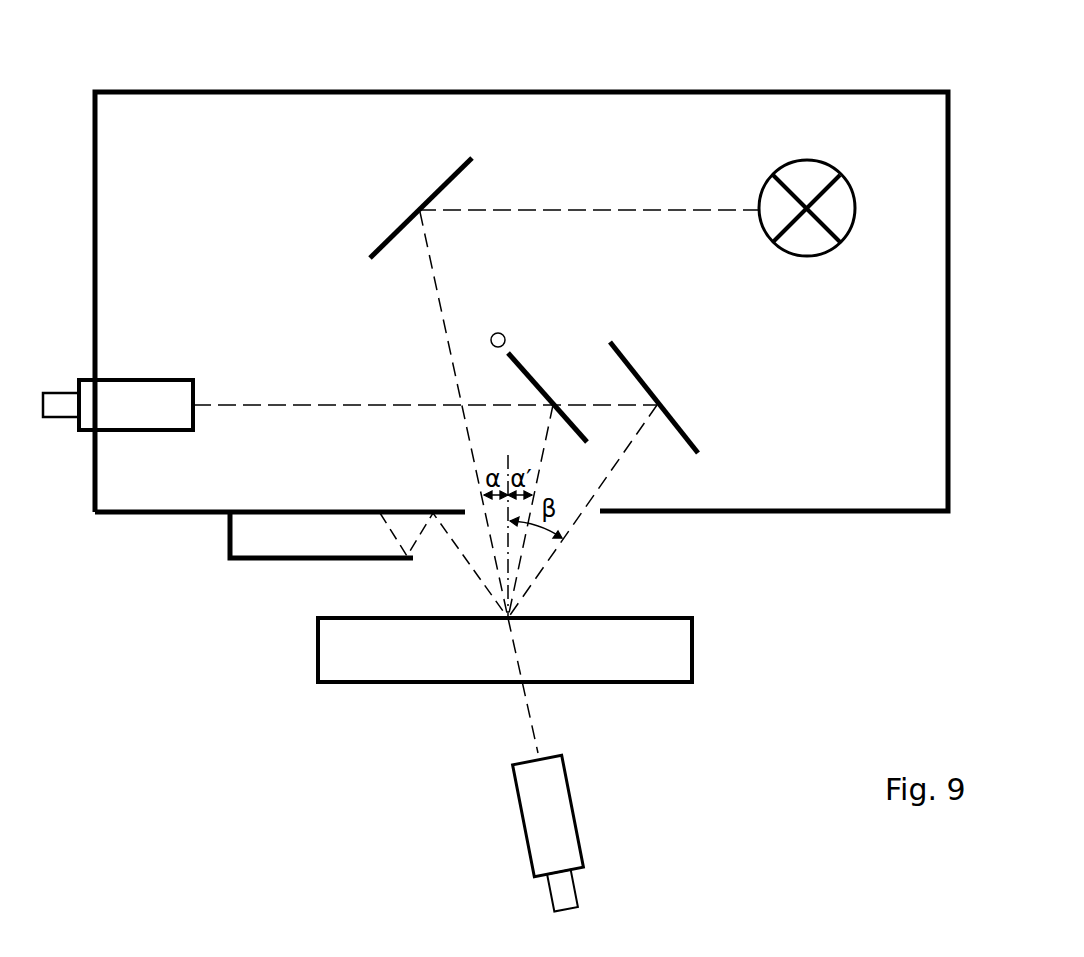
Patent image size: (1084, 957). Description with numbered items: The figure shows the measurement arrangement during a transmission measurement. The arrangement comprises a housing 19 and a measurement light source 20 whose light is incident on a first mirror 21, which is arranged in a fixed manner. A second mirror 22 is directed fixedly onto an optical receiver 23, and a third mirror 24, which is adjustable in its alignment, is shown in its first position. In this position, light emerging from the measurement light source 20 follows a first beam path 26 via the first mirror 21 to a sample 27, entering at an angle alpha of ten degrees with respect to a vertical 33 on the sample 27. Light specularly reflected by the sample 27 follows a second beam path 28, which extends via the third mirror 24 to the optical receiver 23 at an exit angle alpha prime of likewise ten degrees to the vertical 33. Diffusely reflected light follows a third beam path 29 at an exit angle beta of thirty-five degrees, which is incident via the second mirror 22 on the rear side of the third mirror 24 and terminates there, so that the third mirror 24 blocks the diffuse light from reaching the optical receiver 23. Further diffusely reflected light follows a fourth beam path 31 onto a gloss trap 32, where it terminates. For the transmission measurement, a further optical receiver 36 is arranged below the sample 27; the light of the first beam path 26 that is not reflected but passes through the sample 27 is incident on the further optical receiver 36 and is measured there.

The housing 19 is at (817, 88).
The measurement light source 20 is at (835, 168).
The first mirror 21 is at (463, 162).
The second mirror 22 is at (683, 440).
The optical receiver 23 is at (95, 413).
The third mirror 24 is at (532, 355).
The first beam path 26 is at (512, 210).
The sample 27 is at (653, 685).
The second beam path 28 is at (223, 405).
The third beam path 29 is at (577, 522).
The fourth beam path 31 is at (468, 565).
The gloss trap 32 is at (285, 533).
The vertical 33 is at (511, 540).
The further optical receiver 36 is at (538, 808).